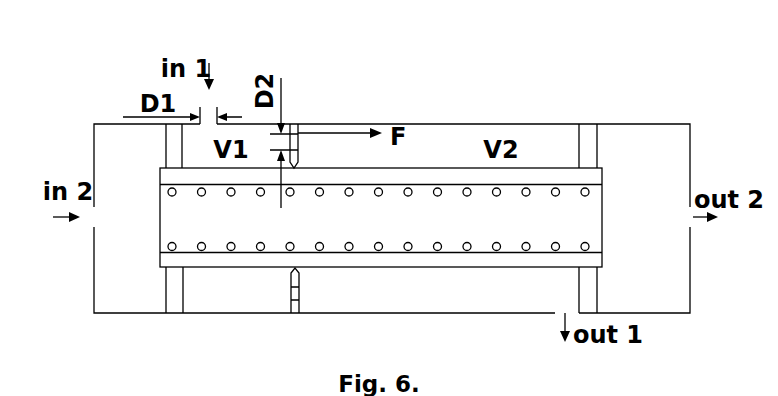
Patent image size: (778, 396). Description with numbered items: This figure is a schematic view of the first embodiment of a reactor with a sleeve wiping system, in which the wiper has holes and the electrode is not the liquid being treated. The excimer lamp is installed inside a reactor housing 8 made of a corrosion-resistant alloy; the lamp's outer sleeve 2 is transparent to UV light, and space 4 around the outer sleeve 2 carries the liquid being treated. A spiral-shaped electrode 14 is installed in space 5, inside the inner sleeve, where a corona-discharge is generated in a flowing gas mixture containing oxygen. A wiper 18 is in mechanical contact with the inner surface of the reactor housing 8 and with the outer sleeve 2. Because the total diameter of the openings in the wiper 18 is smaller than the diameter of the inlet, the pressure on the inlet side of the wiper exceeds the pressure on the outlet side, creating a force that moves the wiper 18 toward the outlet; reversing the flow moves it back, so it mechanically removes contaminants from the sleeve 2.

The outer sleeve 2 is at (393, 168).
The space around outer sleeve 4 is at (335, 130).
The space inside inner sleeve 5 is at (330, 198).
The reactor housing 8 is at (482, 123).
The electrode 14 is at (528, 192).
The wiper 18 is at (295, 130).